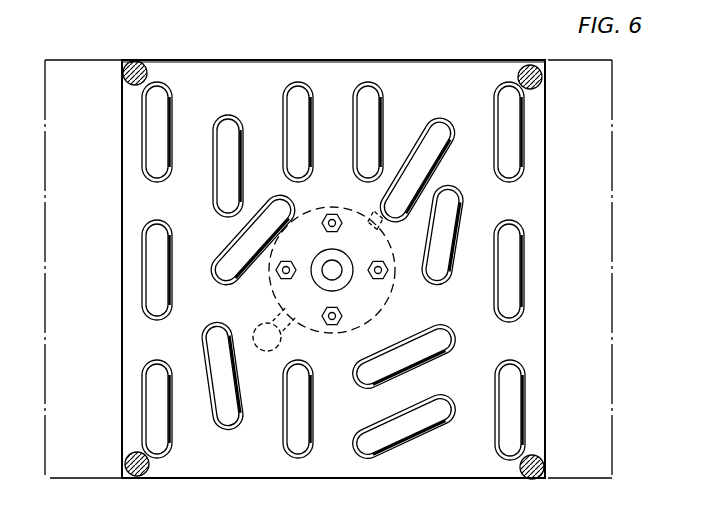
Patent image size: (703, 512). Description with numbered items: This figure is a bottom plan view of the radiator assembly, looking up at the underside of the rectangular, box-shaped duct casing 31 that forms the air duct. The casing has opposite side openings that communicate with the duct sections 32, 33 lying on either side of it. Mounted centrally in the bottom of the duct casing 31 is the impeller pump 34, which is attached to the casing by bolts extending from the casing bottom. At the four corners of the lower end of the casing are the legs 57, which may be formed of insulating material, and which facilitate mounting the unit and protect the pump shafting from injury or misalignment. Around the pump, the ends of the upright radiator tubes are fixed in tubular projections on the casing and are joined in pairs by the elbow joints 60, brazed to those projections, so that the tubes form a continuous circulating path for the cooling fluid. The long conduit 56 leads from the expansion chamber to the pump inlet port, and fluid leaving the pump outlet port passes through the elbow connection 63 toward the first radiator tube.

The duct casing 31 is at (446, 59).
The duct section 32 is at (45, 134).
The duct section 33 is at (612, 130).
The impeller pump 34 is at (332, 334).
The long conduit 56 is at (262, 351).
The legs 57 is at (135, 63).
The elbow joints 60 is at (172, 131).
The elbow connection 63 is at (372, 206).